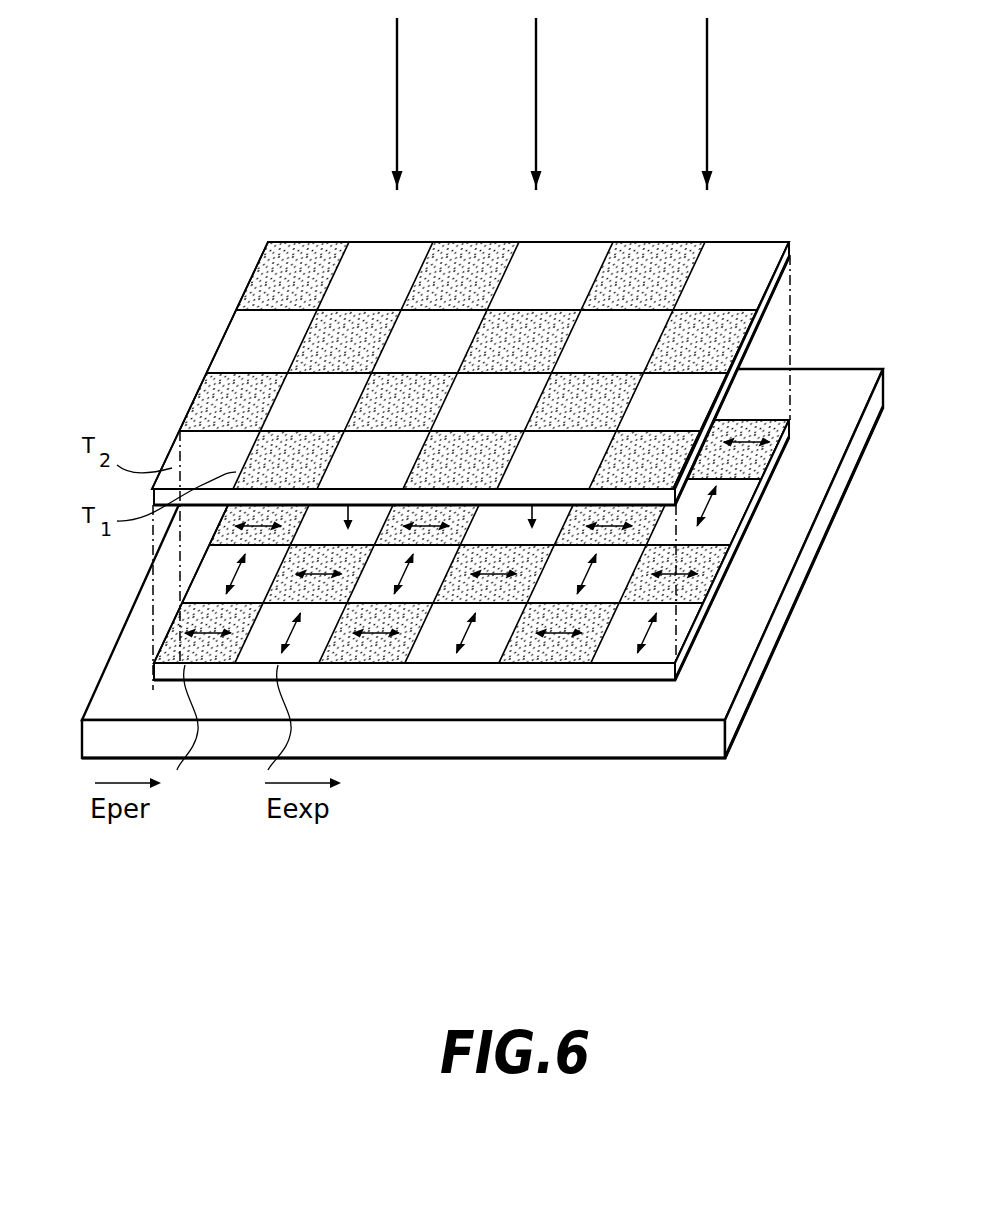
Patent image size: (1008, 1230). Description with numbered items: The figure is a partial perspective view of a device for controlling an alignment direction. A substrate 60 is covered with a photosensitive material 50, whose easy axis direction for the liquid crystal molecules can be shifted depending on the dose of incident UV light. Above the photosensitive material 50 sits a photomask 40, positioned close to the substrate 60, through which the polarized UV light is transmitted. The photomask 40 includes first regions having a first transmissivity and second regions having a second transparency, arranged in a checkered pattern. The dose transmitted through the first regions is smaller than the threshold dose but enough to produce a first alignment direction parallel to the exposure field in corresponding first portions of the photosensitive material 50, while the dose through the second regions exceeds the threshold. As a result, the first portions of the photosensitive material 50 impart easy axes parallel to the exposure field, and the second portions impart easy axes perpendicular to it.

The photomask 40 is at (752, 333).
The photosensitive material 50 is at (776, 455).
The substrate 60 is at (793, 598).